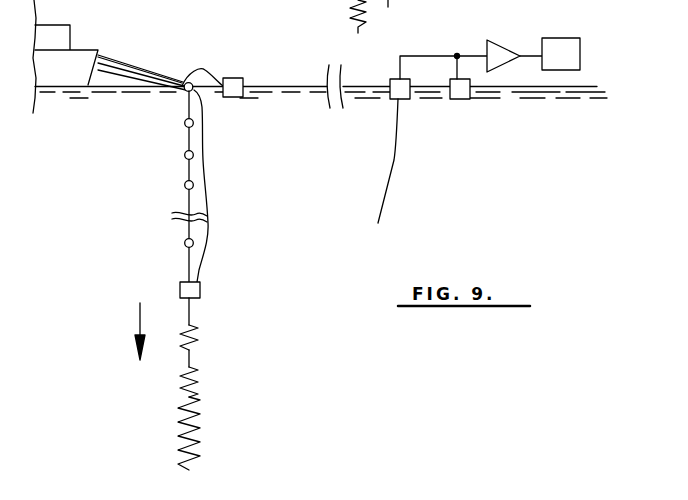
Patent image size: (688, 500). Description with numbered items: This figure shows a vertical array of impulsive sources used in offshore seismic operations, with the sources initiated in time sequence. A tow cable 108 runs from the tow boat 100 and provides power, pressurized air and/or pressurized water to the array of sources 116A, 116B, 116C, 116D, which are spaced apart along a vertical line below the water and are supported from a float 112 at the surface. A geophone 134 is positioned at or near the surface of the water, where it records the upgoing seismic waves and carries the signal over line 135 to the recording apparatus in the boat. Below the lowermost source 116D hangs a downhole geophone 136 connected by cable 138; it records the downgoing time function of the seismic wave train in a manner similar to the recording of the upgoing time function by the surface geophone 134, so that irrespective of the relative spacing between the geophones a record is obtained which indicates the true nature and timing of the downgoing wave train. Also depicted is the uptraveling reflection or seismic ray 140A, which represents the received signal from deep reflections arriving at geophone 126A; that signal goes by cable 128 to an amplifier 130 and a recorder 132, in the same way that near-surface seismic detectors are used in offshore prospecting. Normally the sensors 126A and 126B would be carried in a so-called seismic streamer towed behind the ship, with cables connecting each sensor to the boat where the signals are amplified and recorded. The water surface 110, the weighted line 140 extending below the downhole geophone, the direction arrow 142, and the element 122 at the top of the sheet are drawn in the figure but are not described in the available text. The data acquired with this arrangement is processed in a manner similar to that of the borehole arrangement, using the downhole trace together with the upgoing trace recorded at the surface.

The tow boat 100 is at (84, 47).
The liquid surface 110 is at (279, 86).
The line 135 is at (133, 70).
The tow cable 108 is at (137, 62).
The float 112 is at (183, 92).
The geophone 134 is at (242, 78).
The cable 138 is at (115, 72).
The source 116A is at (185, 125).
The source 116B is at (185, 157).
The source 116C is at (185, 187).
The source 116D is at (184, 244).
The downhole geophone 136 is at (200, 290).
The weighted line 140 is at (190, 397).
The direction of current 142 is at (140, 318).
The geophone 126A is at (410, 100).
The sensor 126B is at (470, 100).
The cable 128 is at (432, 56).
The amplifier 130 is at (487, 42).
The recorder 132 is at (580, 50).
The uptraveling reflection or seismic ray 140A is at (395, 162).
The resistor 122 is at (312, 0).